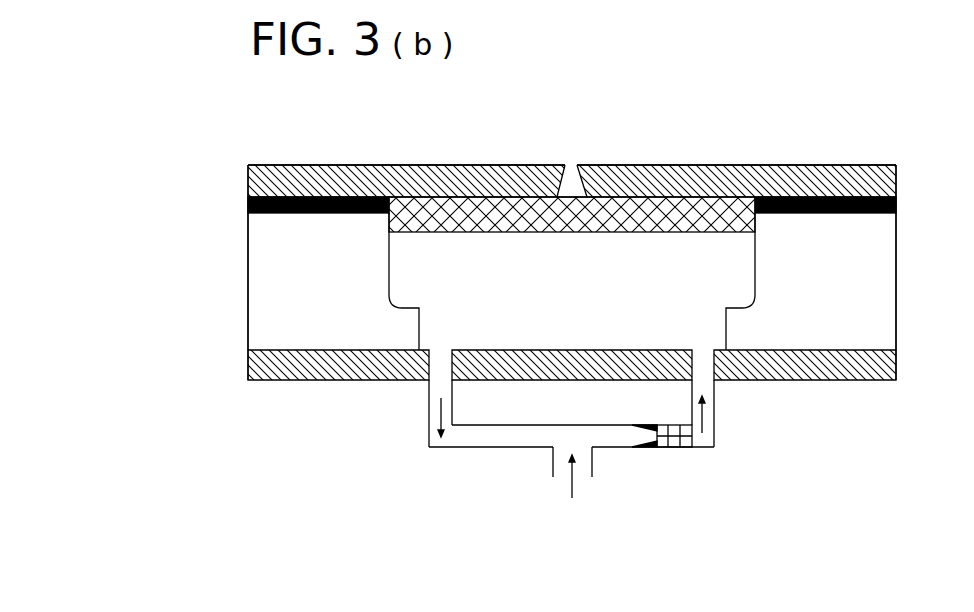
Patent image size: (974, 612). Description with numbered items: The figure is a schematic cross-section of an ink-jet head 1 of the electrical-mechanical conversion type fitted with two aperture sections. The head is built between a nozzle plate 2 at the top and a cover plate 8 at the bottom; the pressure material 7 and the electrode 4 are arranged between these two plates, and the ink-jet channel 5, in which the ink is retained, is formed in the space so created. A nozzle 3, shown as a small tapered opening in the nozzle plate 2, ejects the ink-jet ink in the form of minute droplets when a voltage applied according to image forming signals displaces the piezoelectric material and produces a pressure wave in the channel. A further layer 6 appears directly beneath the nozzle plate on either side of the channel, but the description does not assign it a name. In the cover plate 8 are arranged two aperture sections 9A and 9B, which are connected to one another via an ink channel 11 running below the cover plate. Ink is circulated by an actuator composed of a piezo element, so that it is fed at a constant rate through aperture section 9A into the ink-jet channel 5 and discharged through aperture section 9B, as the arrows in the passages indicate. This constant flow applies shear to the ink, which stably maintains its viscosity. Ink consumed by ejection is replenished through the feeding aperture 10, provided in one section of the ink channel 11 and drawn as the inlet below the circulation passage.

The ink-jet head 1 is at (646, 132).
The nozzle plate 2 is at (884, 181).
The nozzle 3 is at (573, 176).
The electrode 4 is at (472, 165).
The ink-jet channel 5 is at (687, 255).
The electrode layer 6 is at (893, 206).
The pressure material 7 is at (880, 280).
The cover plate 8 is at (884, 362).
The aperture section 9A is at (708, 385).
The aperture section 9B is at (438, 383).
The feeding aperture 10 is at (553, 458).
The ink channel 11 is at (485, 450).